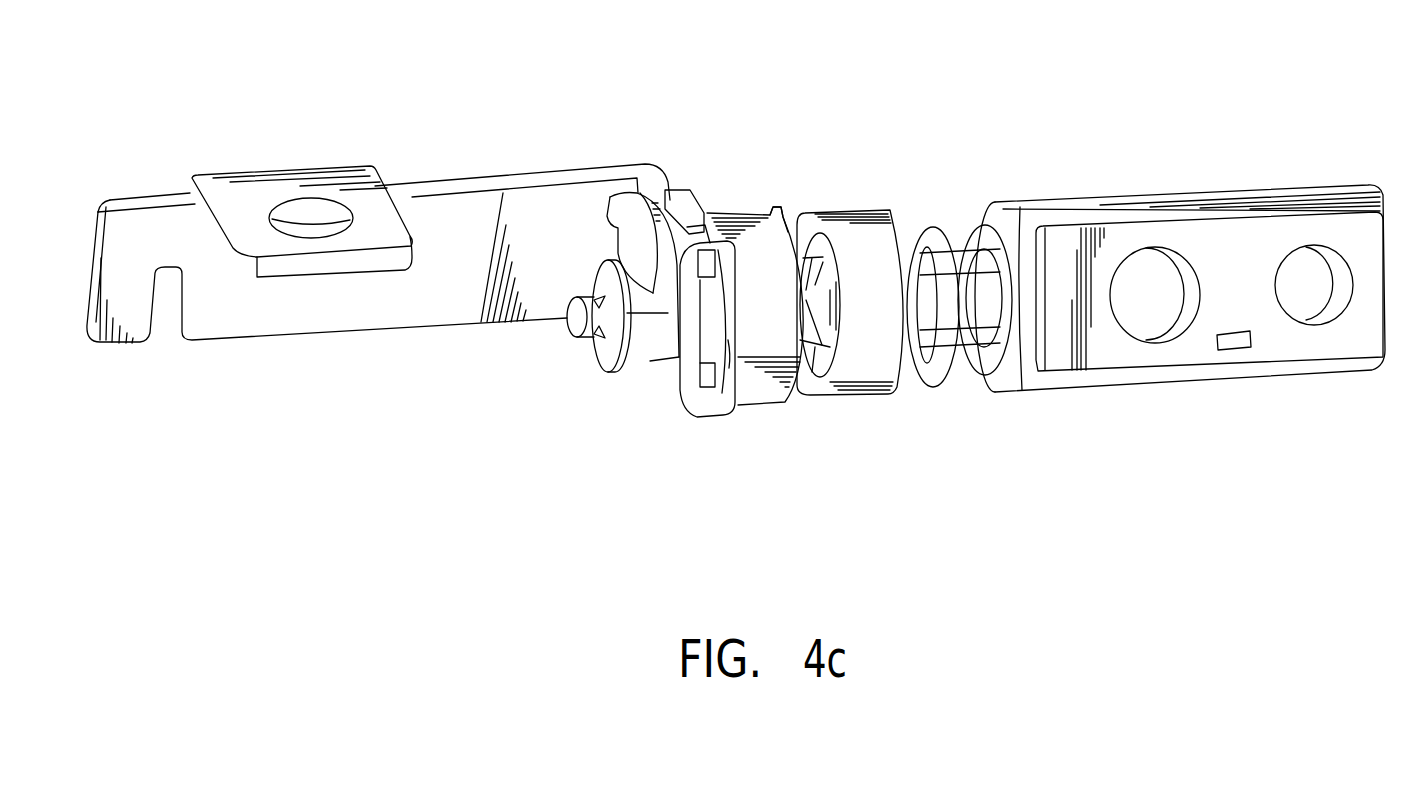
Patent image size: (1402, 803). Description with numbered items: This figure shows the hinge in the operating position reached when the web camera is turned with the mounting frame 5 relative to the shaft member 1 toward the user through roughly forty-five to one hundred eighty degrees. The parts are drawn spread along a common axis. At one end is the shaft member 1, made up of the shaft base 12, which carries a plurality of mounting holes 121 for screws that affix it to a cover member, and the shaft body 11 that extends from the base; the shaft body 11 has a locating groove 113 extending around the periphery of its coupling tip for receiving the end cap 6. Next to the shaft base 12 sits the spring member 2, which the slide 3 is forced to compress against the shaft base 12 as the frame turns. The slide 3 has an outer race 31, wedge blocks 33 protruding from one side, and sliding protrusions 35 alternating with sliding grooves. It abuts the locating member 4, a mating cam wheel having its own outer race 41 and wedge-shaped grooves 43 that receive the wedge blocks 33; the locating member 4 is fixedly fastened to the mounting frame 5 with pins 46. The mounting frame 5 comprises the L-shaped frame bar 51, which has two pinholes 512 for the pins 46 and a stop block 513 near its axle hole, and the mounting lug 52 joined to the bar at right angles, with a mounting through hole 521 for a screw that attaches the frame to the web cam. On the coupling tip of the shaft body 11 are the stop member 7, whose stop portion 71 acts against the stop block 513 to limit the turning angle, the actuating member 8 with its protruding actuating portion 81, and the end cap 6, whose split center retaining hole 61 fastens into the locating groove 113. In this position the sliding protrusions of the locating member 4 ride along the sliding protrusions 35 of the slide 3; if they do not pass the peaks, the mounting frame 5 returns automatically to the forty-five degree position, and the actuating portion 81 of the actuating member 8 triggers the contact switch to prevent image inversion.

The shaft member 1 is at (1152, 255).
The shaft body 11 is at (943, 308).
The shaft base 12 is at (1160, 352).
The mounting holes 121 is at (1312, 310).
The spring member 2 is at (928, 228).
The slide 3 is at (875, 312).
The outer race 31 is at (880, 382).
The wedge blocks 33 is at (843, 393).
The sliding protrusions 35 is at (795, 235).
The locating member 4 is at (760, 284).
The outer race 41 is at (753, 392).
The wedge-shaped grooves 43 is at (783, 215).
The pins 46 is at (707, 215).
The mounting frame 5 is at (445, 301).
The L-shaped frame bar 51 is at (467, 300).
The pinholes 512 is at (698, 192).
The stop block 513 is at (729, 368).
The mounting lug 52 is at (267, 165).
The mounting through hole 521 is at (300, 210).
The end cap 6 is at (555, 306).
The split center retaining hole 61 is at (600, 262).
The locating groove 113 is at (570, 330).
The stop member 7 is at (706, 397).
The stop portion 71 is at (718, 333).
The actuating member 8 is at (641, 294).
The protruding actuating portion 81 is at (637, 345).